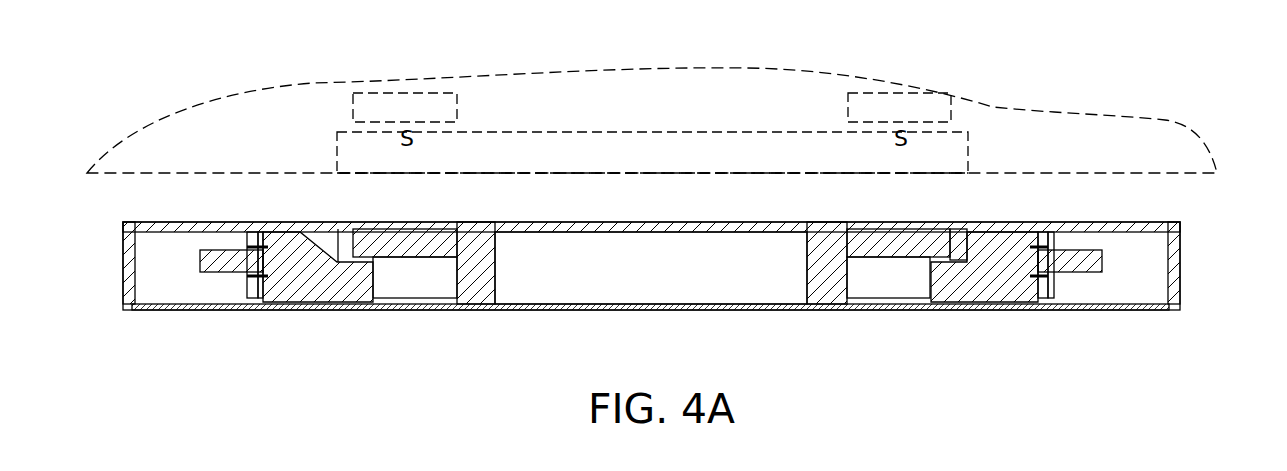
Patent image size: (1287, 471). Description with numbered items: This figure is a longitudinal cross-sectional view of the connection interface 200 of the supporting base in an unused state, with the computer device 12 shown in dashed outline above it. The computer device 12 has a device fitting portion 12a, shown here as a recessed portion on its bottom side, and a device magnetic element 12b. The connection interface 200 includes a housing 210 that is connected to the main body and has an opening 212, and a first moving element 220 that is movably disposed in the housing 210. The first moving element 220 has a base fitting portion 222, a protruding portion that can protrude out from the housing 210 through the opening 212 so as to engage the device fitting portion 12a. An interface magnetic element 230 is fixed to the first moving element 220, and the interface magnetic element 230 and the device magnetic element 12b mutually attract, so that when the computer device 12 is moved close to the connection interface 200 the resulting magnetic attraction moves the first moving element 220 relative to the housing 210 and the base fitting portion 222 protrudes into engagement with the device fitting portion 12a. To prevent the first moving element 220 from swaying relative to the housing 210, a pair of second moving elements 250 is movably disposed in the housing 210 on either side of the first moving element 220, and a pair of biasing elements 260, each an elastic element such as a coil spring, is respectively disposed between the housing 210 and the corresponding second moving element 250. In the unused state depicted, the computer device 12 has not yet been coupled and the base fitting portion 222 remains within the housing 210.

The computer device 12 is at (1176, 120).
The device fitting portion 12a is at (618, 157).
The device magnetic element 12b is at (437, 110).
The connection interface 200 is at (1197, 238).
The housing 210 is at (1175, 279).
The opening 212 is at (964, 231).
The first moving element 220 is at (823, 300).
The base fitting portion 222 is at (800, 226).
The interface magnetic element 230 is at (438, 240).
The second moving elements 250 is at (326, 300).
The biasing elements 260 is at (258, 292).